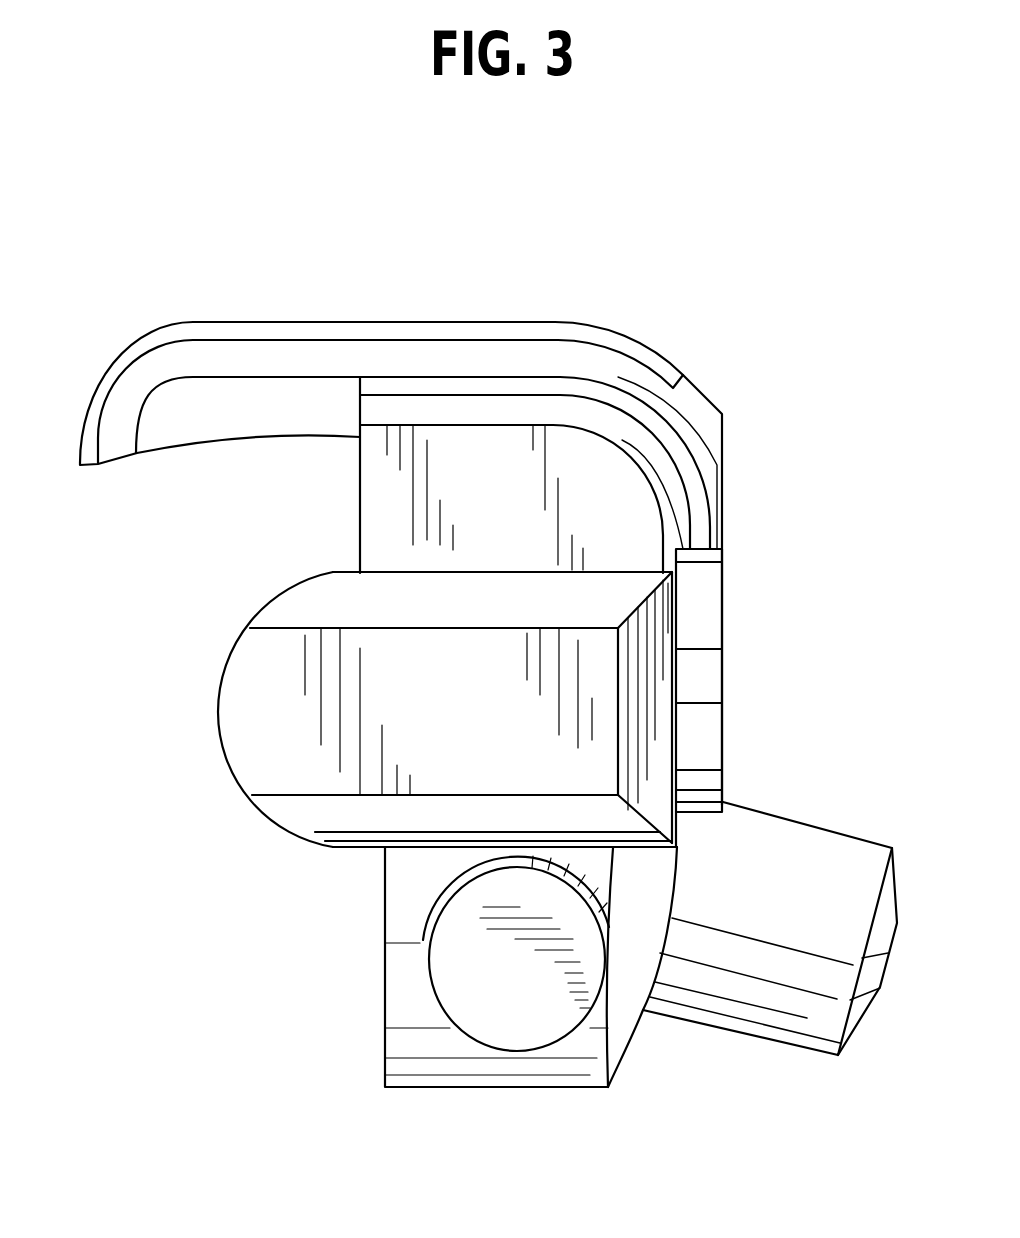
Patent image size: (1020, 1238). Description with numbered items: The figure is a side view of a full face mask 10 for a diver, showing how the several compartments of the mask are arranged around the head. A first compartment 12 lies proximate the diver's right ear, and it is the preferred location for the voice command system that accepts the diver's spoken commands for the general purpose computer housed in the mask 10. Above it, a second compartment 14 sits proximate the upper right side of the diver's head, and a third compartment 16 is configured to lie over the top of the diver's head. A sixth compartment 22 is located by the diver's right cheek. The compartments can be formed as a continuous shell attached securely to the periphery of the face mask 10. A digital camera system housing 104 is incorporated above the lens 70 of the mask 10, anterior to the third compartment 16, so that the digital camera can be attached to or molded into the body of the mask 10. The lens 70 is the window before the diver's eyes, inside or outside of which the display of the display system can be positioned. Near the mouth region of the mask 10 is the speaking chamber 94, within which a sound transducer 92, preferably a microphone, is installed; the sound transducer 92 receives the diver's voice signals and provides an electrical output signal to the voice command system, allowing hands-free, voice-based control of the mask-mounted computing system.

The full face mask 10 is at (411, 248).
The third compartment 16 is at (487, 357).
The digital camera system housing 104 is at (687, 370).
The second compartment 14 is at (457, 520).
The first compartment 12 is at (392, 742).
The lens 70 is at (703, 725).
The sixth compartment 22 is at (467, 980).
The speaking chamber 94 is at (678, 897).
The sound transducer 92 is at (755, 915).